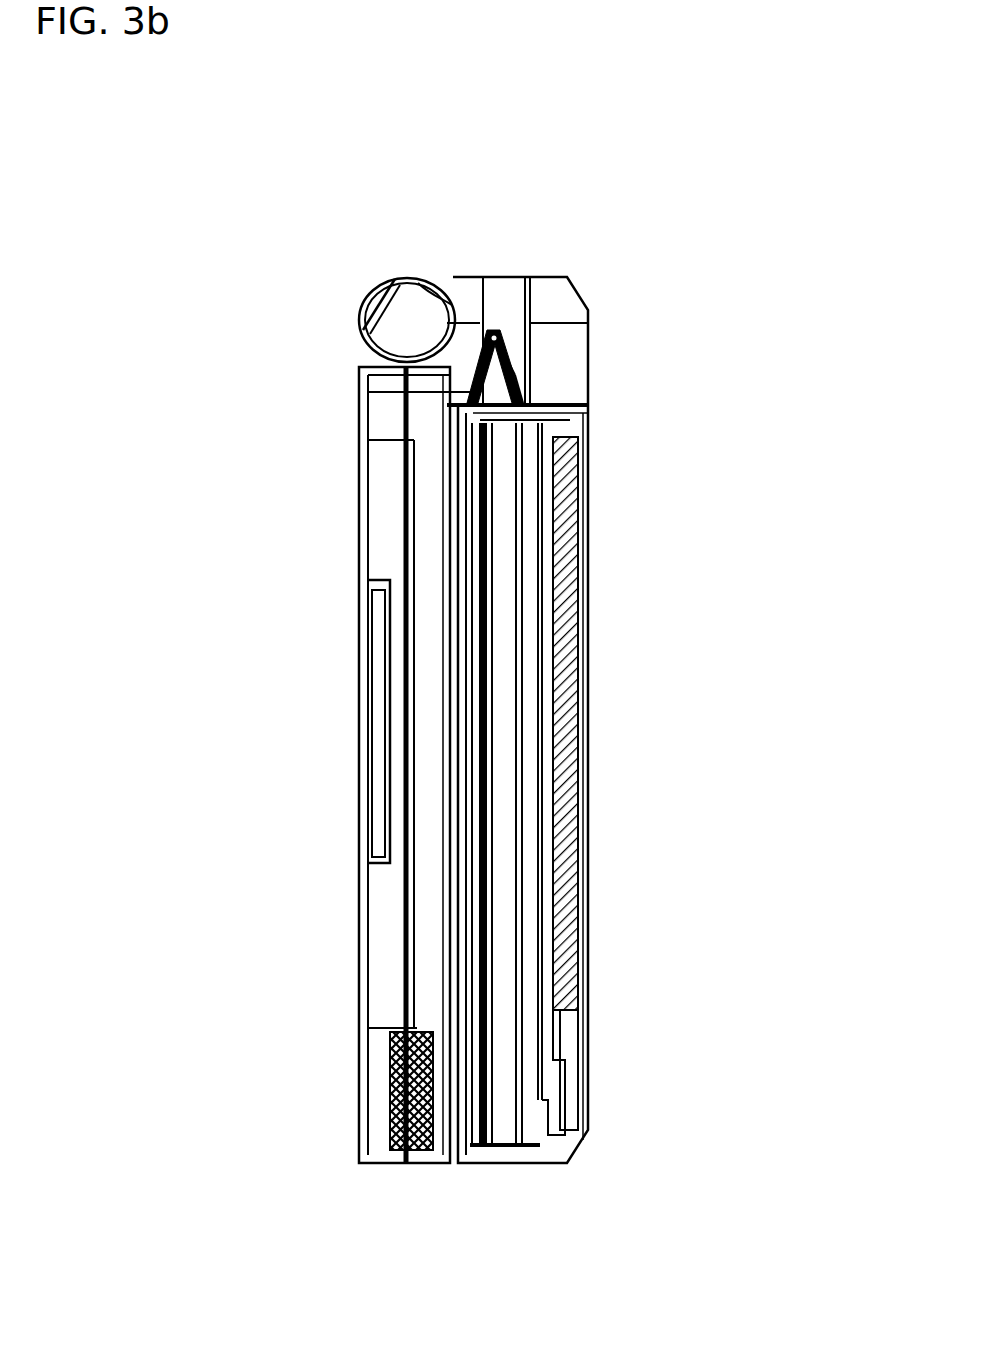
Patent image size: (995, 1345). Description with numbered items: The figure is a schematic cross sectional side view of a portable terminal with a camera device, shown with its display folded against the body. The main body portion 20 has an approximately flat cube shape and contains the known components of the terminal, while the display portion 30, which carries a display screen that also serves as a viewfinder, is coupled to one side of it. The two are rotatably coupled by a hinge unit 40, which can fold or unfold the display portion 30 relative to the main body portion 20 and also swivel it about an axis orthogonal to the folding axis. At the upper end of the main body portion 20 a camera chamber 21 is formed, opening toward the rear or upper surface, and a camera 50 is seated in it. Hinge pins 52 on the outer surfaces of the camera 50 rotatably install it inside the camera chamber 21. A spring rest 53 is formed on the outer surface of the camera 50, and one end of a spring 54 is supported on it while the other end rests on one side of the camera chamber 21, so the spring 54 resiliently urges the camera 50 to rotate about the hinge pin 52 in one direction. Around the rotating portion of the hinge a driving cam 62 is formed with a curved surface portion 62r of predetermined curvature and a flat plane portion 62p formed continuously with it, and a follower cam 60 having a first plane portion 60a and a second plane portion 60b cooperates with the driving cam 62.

The main body portion 20 is at (587, 1045).
The camera chamber 21 is at (470, 400).
The display portion 30 is at (357, 988).
The hinge unit 40 is at (372, 292).
The camera 50 is at (562, 303).
The hinge pin 52 is at (503, 330).
The spring rest 53 is at (537, 382).
The spring 54 is at (523, 357).
The follower cam 60 is at (537, 127).
The first plane portion 60a is at (410, 277).
The second plane portion 60b is at (453, 277).
The driving cam 62 is at (168, 305).
The plane portion 62p is at (360, 320).
The curved surface portion 62r is at (372, 350).